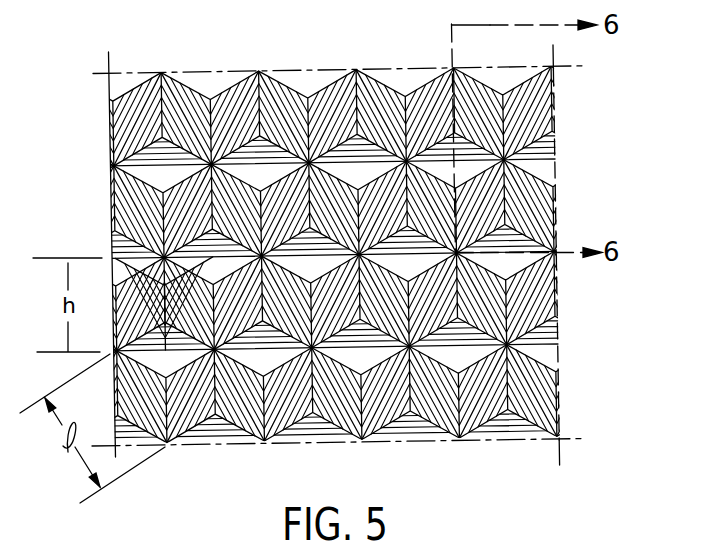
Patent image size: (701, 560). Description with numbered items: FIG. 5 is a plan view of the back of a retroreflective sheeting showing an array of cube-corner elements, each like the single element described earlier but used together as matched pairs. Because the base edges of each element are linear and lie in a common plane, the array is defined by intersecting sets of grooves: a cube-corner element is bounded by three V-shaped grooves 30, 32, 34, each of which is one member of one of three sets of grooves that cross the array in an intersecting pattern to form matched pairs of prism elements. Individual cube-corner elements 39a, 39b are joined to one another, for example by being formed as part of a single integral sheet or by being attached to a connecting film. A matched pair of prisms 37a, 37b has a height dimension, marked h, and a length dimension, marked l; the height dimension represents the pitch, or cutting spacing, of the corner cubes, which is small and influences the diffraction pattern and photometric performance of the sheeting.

The V-shaped groove 30 is at (283, 110).
The V-shaped groove 32 is at (238, 102).
The V-shaped groove 34 is at (152, 166).
The prism of matched pair 37a is at (152, 307).
The prism of matched pair 37b is at (155, 403).
The cube-corner element 39a is at (468, 168).
The cube-corner element 39b is at (440, 107).